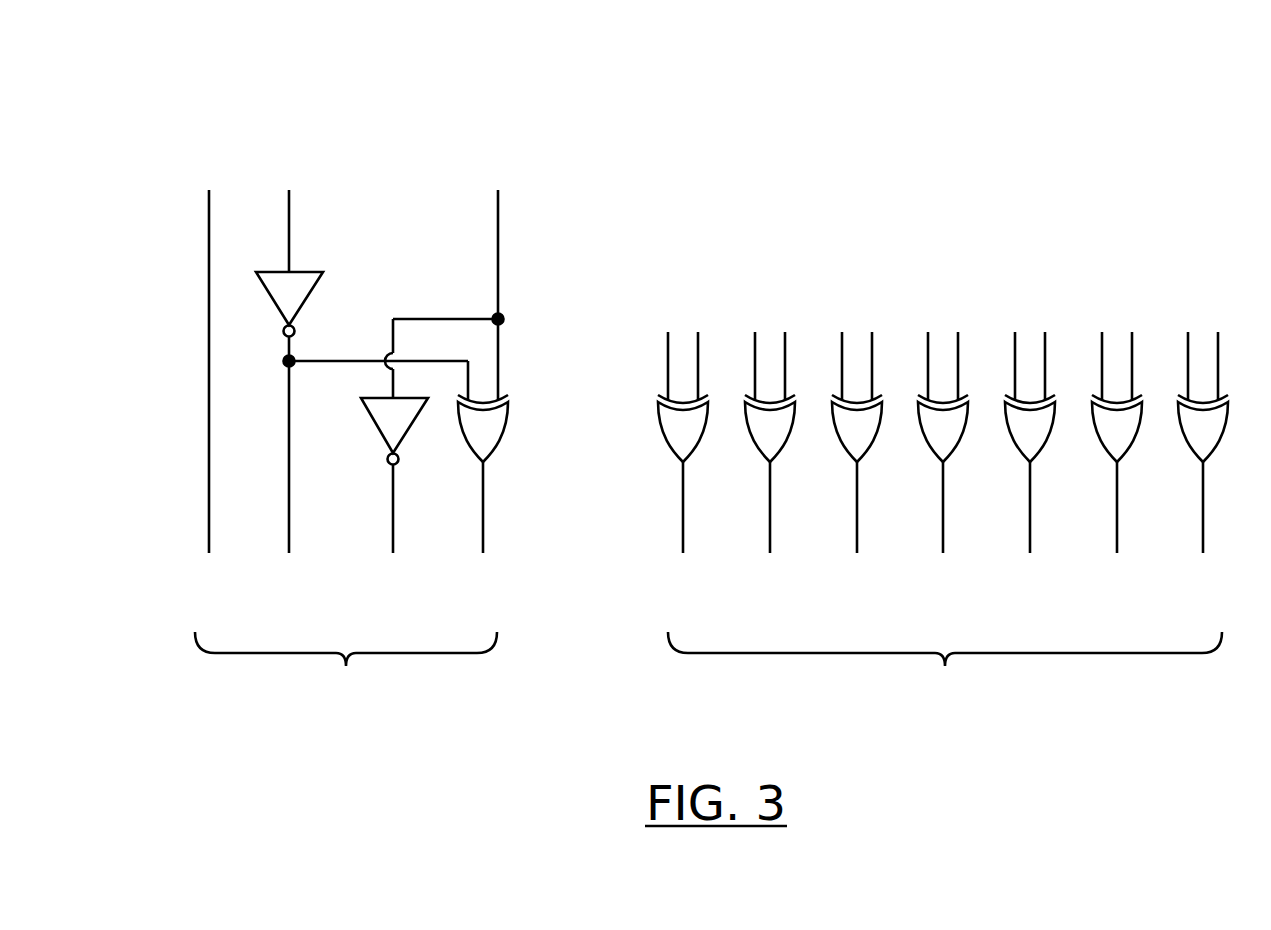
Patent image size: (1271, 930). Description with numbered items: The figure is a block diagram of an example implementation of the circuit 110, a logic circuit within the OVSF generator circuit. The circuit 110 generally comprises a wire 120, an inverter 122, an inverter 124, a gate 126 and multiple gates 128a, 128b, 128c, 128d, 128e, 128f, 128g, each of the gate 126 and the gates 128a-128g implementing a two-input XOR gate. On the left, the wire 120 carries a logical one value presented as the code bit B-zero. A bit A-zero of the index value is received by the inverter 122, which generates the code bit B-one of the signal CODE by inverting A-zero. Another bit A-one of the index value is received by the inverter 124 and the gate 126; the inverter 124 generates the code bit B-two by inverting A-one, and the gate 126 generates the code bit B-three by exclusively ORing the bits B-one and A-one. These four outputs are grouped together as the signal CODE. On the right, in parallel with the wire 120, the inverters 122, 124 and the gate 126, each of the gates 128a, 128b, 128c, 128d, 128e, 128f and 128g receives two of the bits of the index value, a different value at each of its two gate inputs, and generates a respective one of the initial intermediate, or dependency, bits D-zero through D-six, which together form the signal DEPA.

The circuit 110 is at (682, 65).
The wire 120 is at (209, 298).
The inverter 122 is at (308, 271).
The inverter 124 is at (382, 446).
The gate 126 is at (490, 458).
The gate 128a is at (677, 459).
The gate 128b is at (764, 459).
The gate 128c is at (851, 459).
The gate 128d is at (937, 459).
The gate 128e is at (1024, 459).
The gate 128f is at (1111, 459).
The gate 128g is at (1197, 459).